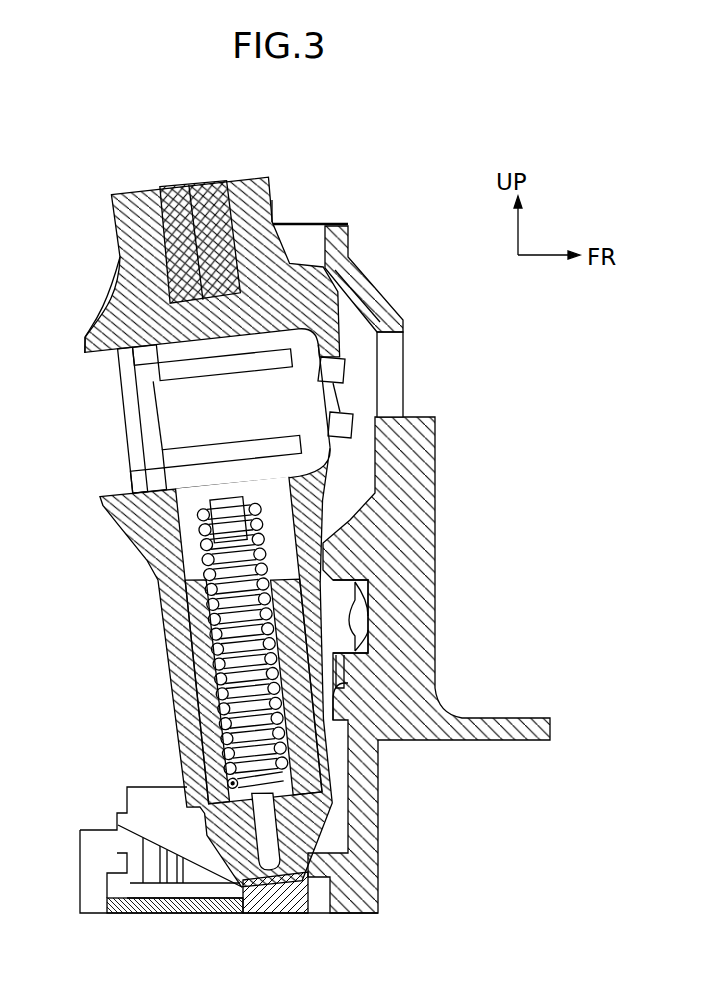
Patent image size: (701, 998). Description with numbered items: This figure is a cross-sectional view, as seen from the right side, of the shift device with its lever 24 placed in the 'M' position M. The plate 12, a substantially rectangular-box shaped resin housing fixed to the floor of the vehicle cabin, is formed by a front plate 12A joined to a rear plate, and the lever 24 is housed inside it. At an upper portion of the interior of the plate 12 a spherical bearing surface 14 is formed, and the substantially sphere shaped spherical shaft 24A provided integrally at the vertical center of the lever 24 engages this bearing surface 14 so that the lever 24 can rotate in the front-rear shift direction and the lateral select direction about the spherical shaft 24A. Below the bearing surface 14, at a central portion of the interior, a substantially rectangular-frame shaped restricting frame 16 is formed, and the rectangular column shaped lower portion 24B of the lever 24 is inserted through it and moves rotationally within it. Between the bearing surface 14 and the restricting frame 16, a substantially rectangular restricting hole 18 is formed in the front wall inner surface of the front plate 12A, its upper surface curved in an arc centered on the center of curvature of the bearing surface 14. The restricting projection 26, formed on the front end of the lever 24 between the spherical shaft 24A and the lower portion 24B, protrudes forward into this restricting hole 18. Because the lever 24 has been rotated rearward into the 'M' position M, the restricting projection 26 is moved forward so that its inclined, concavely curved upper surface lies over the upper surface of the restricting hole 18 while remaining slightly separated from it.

The lever 24 is at (112, 226).
The spherical shaft 24A is at (100, 318).
The lower portion 24B is at (333, 747).
The 'M' position M is at (272, 197).
The plate 12 is at (429, 534).
The front plate 12A is at (392, 182).
The bearing surface 14 is at (368, 310).
The restricting frame 16 is at (333, 766).
The restricting hole 18 is at (368, 636).
The restricting projection 26 is at (357, 594).